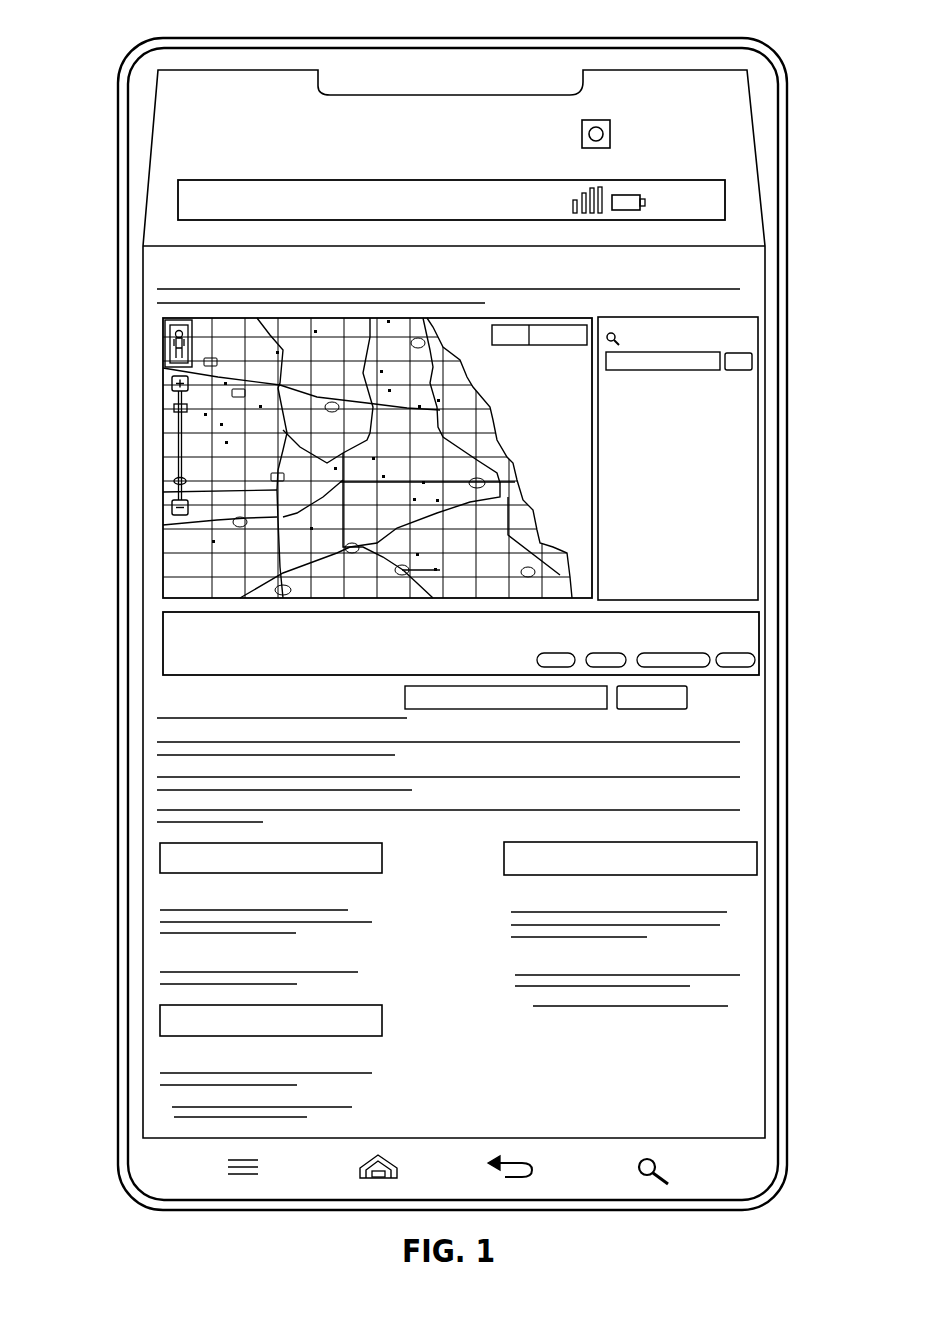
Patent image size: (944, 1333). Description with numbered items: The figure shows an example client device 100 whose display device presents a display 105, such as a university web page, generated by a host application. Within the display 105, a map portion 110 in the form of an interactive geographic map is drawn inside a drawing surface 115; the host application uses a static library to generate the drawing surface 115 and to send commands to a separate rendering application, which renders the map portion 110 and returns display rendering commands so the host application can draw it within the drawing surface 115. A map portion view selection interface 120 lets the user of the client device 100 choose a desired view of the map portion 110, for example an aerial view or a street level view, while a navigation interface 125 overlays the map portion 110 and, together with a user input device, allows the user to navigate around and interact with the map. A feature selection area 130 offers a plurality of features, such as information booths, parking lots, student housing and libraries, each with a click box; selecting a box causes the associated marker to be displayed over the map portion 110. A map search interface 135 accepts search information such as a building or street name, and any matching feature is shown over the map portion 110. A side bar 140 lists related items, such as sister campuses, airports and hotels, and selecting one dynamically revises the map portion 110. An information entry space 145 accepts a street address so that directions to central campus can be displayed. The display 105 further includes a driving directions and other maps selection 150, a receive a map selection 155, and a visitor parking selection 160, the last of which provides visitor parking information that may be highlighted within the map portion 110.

The client device 100 is at (804, 64).
The display 105 is at (733, 246).
The map portion 110 is at (172, 499).
The drawing surface 115 is at (158, 563).
The map portion view selection interface 120 is at (168, 330).
The navigation interface 125 is at (165, 425).
The feature selection area 130 is at (746, 630).
The map search interface 135 is at (712, 352).
The side bar 140 is at (745, 430).
The information entry space 145 is at (578, 710).
The driving directions and other maps selection 150 is at (750, 858).
The receive a map selection 155 is at (158, 856).
The visitor parking selection 160 is at (158, 1020).